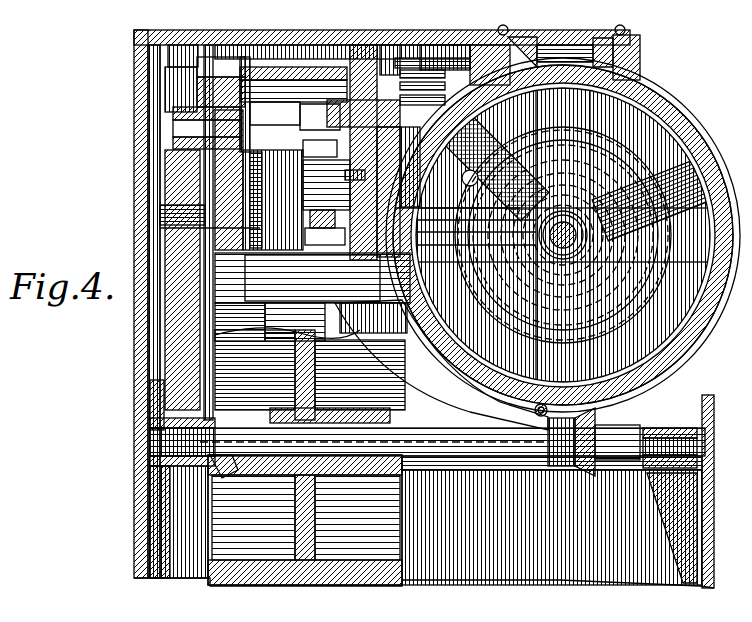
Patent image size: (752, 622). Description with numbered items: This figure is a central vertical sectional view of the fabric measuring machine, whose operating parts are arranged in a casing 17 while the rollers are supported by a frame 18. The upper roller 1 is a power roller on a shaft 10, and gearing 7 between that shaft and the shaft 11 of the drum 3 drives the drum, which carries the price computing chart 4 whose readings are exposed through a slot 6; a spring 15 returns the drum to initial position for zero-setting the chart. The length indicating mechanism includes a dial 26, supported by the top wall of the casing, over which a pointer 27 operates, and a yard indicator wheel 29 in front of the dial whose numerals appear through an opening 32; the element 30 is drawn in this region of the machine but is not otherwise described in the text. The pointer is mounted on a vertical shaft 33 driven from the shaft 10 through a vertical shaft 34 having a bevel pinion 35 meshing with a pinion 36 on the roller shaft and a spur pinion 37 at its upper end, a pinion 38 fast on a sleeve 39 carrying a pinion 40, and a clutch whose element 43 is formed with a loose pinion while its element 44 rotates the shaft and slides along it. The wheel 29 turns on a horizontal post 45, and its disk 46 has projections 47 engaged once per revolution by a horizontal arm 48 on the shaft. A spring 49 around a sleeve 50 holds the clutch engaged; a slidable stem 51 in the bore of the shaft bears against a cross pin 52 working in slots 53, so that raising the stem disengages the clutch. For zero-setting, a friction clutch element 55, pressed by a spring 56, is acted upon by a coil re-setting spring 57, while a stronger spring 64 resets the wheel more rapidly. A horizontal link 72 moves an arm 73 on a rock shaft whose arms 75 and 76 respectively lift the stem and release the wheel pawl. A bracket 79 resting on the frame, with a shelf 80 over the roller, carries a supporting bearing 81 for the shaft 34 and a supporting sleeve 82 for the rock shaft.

The upper roller 1 is at (385, 528).
The drum 3 is at (679, 101).
The price computing chart 4 is at (690, 129).
The slot 6 is at (575, 45).
The gearing 7 is at (585, 470).
The shaft 10 is at (427, 442).
The shaft 11 is at (564, 250).
The spring 15 is at (625, 160).
The casing 17 is at (134, 402).
The frame 18 is at (150, 490).
The dial 26 is at (462, 48).
The pointer 27 is at (348, 45).
The yard indicator wheel 29 is at (134, 82).
The liner 30 is at (148, 104).
The opening 32 is at (200, 45).
The vertical shaft 33 is at (402, 58).
The vertical shaft 34 is at (204, 345).
The bevel pinion 35 is at (310, 376).
The pinion 36 is at (232, 468).
The spur pinion 37 is at (160, 215).
The pinion 38 is at (325, 227).
The sleeve 39 is at (334, 185).
The pinion 40 is at (300, 126).
The clutch element 43 is at (320, 148).
The clutch element 44 is at (312, 80).
The horizontal post 45 is at (186, 128).
The disk 46 is at (292, 62).
The projections 47 is at (288, 72).
The horizontal arm 48 is at (290, 45).
The spring 49 is at (405, 74).
The sleeve 50 is at (405, 86).
The slidable stem 51 is at (445, 268).
The cross pin 52 is at (385, 45).
The slots 53 is at (490, 150).
The clutch element 55 is at (462, 176).
The spring 56 is at (470, 232).
The re-setting spring 57 is at (405, 100).
The spring 64 is at (226, 77).
The horizontal link 72 is at (534, 409).
The arm 73 is at (441, 365).
The horizontal arm 75 is at (373, 318).
The horizontal arm 76 is at (295, 322).
The bracket 79 is at (165, 178).
The shelf 80 is at (287, 325).
The supporting bearing 81 is at (240, 322).
The supporting sleeve 82 is at (312, 278).